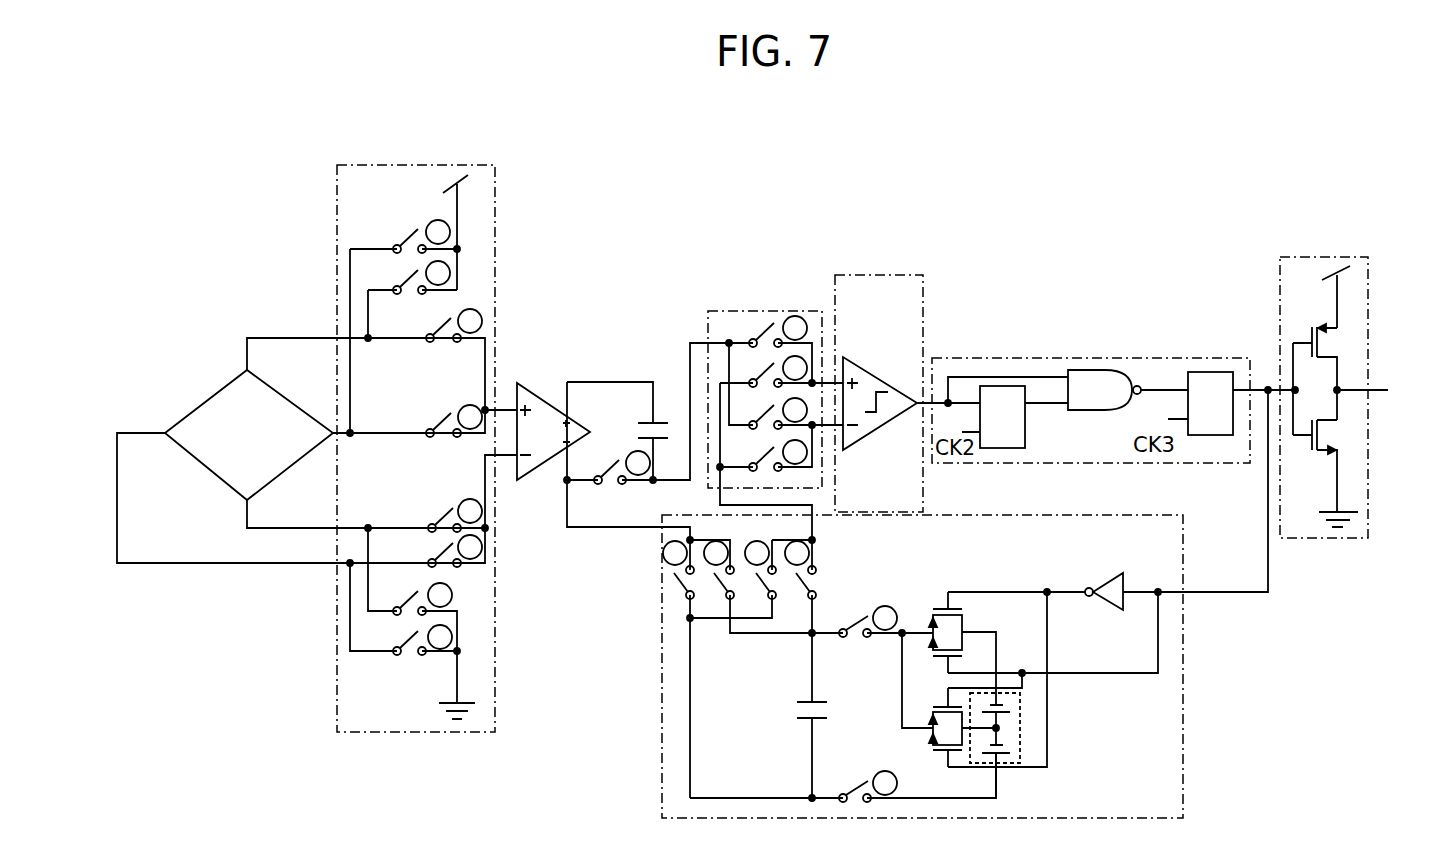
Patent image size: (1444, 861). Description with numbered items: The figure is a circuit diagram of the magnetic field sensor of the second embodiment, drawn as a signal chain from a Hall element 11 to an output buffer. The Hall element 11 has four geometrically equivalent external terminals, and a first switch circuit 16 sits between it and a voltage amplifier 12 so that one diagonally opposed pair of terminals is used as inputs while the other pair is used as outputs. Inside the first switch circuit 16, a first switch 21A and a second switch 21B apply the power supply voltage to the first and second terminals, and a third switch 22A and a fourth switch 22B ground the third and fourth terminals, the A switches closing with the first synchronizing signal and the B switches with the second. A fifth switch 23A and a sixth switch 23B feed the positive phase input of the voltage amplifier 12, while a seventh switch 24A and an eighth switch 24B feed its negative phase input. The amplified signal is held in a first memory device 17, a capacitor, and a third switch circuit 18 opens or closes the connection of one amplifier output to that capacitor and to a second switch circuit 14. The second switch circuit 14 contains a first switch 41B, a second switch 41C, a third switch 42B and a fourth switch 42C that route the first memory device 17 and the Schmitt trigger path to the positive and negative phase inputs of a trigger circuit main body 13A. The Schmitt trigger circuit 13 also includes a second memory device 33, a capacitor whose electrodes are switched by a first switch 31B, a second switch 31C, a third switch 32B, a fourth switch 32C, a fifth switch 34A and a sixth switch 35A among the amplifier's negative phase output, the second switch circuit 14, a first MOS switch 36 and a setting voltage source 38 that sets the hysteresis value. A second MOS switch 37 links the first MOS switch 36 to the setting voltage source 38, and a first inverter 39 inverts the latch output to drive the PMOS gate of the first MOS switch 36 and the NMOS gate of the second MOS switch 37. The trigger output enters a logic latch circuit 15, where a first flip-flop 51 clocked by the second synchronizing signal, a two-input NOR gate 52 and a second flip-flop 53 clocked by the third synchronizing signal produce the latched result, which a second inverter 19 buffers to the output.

The Hall element 11 is at (197, 403).
The voltage amplifier 12 is at (540, 396).
The Schmitt trigger circuit 13 is at (893, 273).
The trigger circuit main body 13A is at (878, 372).
The second switch circuit 14 is at (818, 313).
The logic latch circuit 15 is at (1033, 357).
The first switch circuit 16 is at (497, 252).
The first memory device 17 is at (668, 418).
The third switch circuit 18 is at (598, 486).
The second inverter 19 is at (1317, 255).
The first switch 21A is at (395, 295).
The second switch 21B is at (394, 243).
The third switch 22A is at (394, 612).
The fourth switch 22B is at (397, 660).
The fifth switch 23A is at (429, 429).
The sixth switch 23B is at (429, 343).
The seventh switch 24A is at (431, 559).
The eighth switch 24B is at (431, 524).
The first switch 31B is at (686, 597).
The second switch 31C is at (729, 600).
The third switch 32B is at (811, 600).
The fourth switch 32C is at (771, 600).
The second memory device 33 is at (823, 702).
The fifth switch 34A is at (842, 628).
The sixth switch 35A is at (843, 793).
The first MOS switch 36 is at (965, 620).
The second MOS switch 37 is at (945, 752).
The setting voltage source 38 is at (1022, 738).
The first inverter 39 is at (1107, 607).
The first switch 41B is at (752, 338).
The second switch 41C is at (751, 423).
The third switch 42B is at (758, 469).
The fourth switch 42C is at (751, 380).
The first flip-flop 51 is at (1025, 417).
The 2-input NOR gate 52 is at (1100, 410).
The second flip-flop 53 is at (1222, 435).